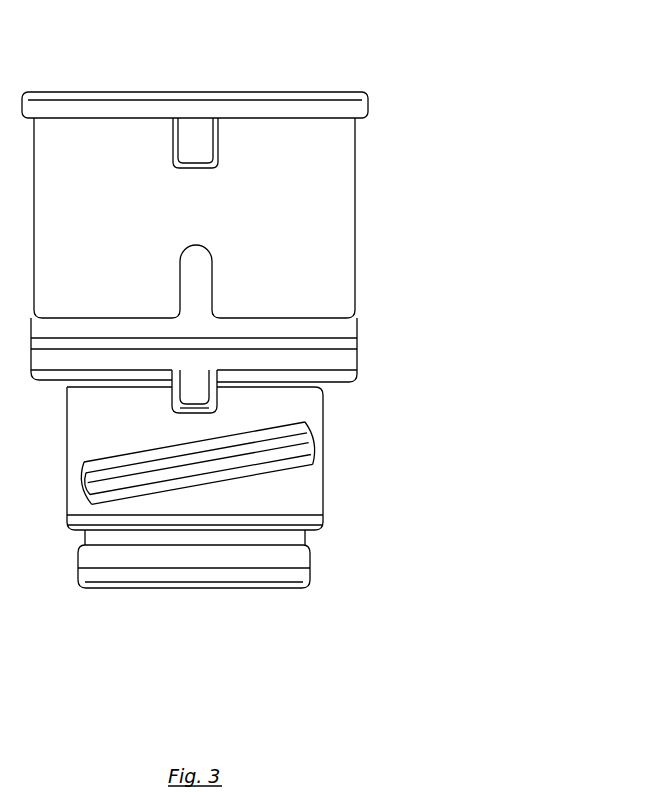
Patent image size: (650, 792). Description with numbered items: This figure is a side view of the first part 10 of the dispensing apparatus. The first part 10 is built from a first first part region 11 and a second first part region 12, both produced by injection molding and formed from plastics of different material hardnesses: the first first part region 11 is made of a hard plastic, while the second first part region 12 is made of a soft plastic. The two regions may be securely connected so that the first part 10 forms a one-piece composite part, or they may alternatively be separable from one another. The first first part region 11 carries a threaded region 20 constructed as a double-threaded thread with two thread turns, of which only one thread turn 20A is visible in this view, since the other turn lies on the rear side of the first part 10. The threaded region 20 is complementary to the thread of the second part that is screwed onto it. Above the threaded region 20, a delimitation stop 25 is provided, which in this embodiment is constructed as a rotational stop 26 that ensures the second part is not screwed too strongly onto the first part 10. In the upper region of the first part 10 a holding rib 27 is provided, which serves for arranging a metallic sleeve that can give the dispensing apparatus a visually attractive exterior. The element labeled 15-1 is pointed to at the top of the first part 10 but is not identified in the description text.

The first part 10 is at (269, 312).
The first first part region 11 is at (305, 401).
The second first part region 12 is at (326, 537).
The cover 15-1 is at (120, 84).
The threaded region 20 is at (280, 489).
The thread turn 20A is at (277, 458).
The delimitation stop 25 is at (339, 374).
The rotational stop 26 is at (193, 381).
The holding rib 27 is at (195, 135).